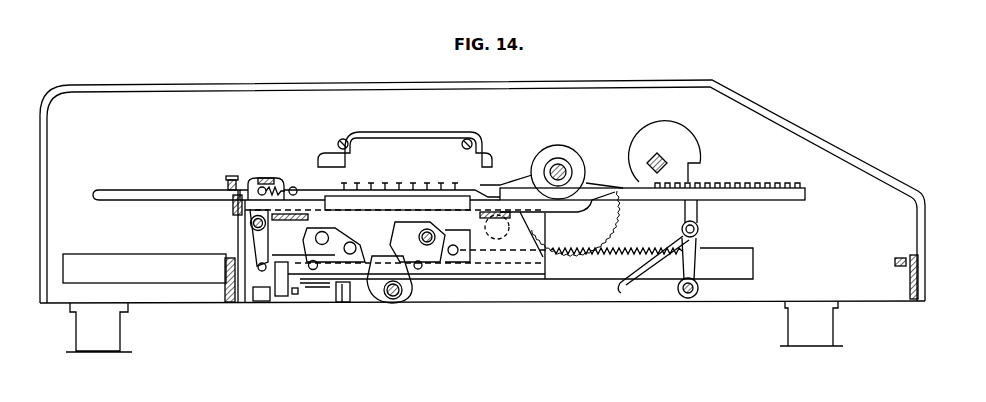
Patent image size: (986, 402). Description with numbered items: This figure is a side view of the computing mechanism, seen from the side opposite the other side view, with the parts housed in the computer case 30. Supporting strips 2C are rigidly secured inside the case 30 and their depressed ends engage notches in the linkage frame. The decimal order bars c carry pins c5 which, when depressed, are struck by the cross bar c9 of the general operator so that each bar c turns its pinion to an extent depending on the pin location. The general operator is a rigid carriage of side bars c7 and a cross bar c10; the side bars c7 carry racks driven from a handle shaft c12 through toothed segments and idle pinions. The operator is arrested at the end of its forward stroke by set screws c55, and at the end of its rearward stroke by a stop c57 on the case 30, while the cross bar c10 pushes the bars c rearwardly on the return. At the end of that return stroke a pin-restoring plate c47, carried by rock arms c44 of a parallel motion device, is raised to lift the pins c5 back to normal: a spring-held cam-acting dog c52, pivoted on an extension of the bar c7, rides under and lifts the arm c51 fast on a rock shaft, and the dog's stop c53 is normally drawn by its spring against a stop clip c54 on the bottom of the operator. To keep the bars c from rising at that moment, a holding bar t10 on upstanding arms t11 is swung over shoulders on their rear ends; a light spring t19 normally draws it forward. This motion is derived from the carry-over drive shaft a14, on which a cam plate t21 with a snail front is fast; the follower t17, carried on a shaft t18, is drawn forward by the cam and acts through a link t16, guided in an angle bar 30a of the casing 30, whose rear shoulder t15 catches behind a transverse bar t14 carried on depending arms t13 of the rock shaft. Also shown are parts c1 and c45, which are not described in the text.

The case 30 is at (482, 216).
The side bar c7 is at (144, 268).
The shoulder t15 is at (232, 292).
The screw c1 is at (228, 178).
The holding bar t10 is at (266, 178).
The upstanding arm t11 is at (272, 187).
The light spring t19 is at (297, 189).
The rock arm c44 is at (397, 203).
The pin-restoring plate c47 is at (395, 207).
The pin c5 is at (399, 182).
The supporting strip 2C is at (405, 149).
The shaft c12 is at (250, 222).
The depending arm t13 is at (255, 240).
The cross bar c9 is at (408, 255).
The angle bar 30a is at (245, 267).
The transverse bar t14 is at (268, 262).
The stop c57 is at (265, 302).
The stop clip c54 is at (340, 288).
The stop c53 is at (348, 302).
The cam-acting dog c52 is at (385, 304).
The arm c51 is at (432, 262).
The link c45 is at (462, 244).
The cross bar c10 is at (500, 232).
The decimal order bar c is at (551, 212).
The cam plate t21 is at (700, 148).
The carry-over drive shaft a14 is at (656, 153).
The follower t17 is at (698, 211).
The shaft t18 is at (699, 289).
The link t16 is at (616, 276).
The set screw c55 is at (919, 263).